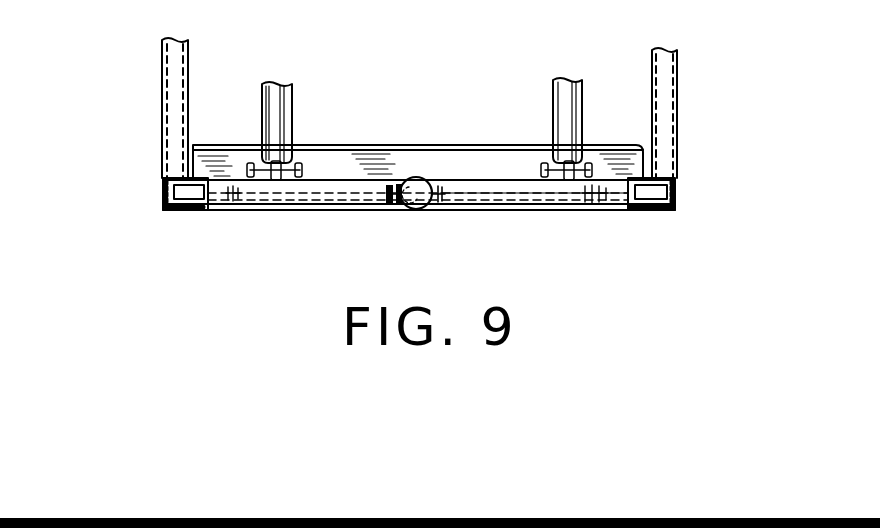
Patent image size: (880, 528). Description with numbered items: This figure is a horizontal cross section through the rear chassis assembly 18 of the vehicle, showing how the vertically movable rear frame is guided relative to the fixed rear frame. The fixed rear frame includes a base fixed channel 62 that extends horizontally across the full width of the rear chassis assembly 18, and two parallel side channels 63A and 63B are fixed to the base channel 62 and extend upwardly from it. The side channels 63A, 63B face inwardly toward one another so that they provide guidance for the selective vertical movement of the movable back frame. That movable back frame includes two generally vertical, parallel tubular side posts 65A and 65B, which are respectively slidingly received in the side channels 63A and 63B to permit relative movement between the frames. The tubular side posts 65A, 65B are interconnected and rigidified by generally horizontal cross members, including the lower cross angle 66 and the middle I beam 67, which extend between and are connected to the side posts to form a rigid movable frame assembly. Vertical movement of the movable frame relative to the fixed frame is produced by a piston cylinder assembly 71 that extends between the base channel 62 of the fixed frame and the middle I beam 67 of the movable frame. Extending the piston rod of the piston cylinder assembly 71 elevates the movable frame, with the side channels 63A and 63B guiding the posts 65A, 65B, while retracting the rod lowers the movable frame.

The rear chassis assembly 18 is at (680, 112).
The base fixed channel 62 is at (358, 212).
The side channel 63A is at (163, 203).
The side channel 63B is at (675, 208).
The tubular side post 65A is at (198, 203).
The tubular side post 65B is at (642, 207).
The lower cross angle 66 is at (463, 162).
The middle I beam 67 is at (530, 203).
The piston cylinder assembly 71 is at (416, 177).